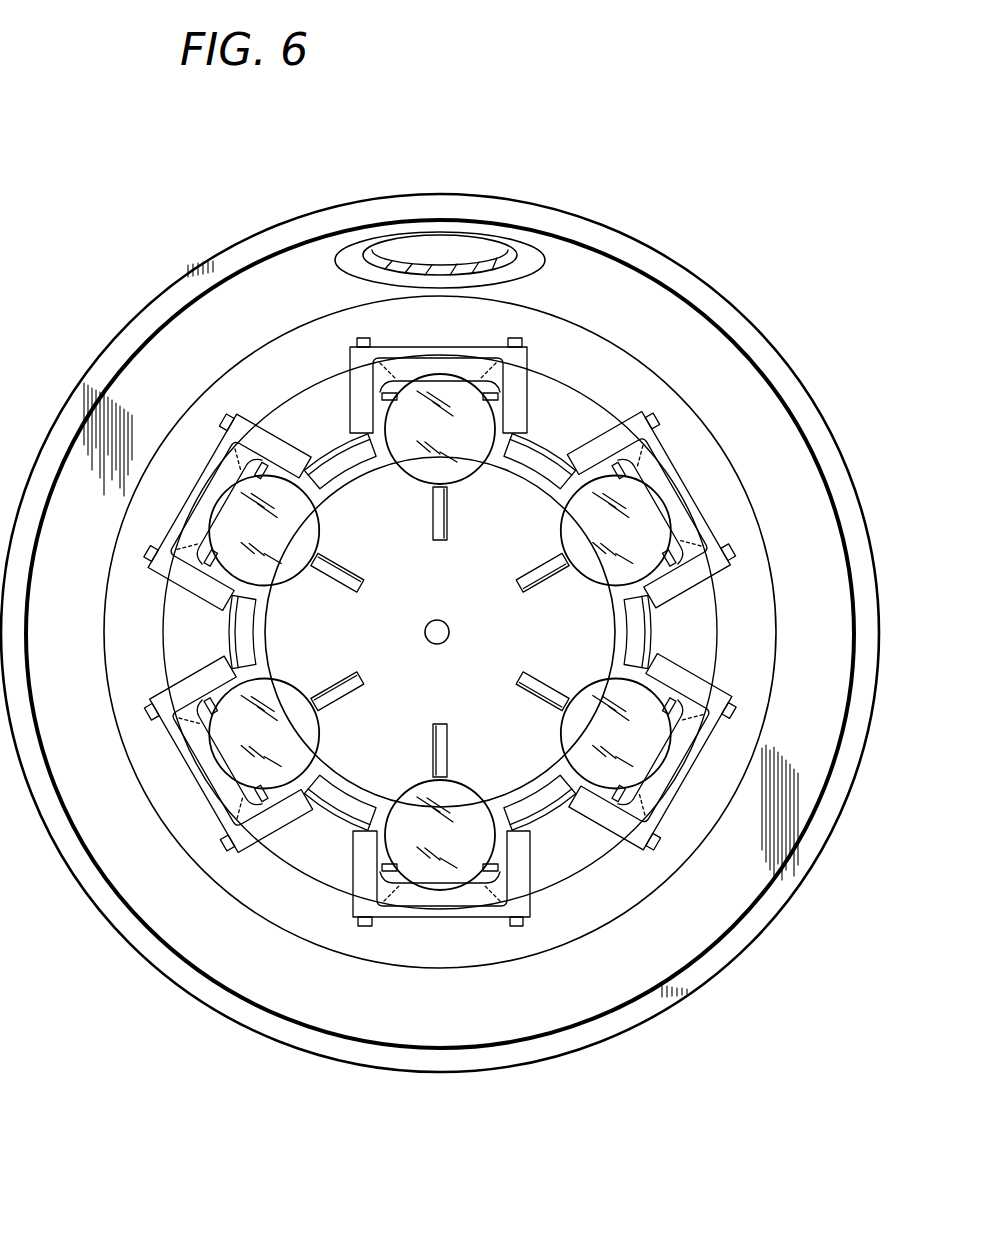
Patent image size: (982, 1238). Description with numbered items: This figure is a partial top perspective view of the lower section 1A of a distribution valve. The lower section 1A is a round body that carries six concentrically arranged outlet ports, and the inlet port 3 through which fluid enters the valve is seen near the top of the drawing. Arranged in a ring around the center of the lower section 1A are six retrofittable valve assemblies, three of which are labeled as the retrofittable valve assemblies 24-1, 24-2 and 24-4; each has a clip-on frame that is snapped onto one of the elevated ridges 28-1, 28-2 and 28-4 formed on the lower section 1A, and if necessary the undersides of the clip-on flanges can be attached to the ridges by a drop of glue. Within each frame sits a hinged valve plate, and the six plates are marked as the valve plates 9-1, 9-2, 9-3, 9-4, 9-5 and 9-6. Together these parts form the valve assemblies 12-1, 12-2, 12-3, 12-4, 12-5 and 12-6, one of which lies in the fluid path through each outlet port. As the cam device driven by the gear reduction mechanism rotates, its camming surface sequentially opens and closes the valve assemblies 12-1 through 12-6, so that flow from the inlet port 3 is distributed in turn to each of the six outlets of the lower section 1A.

The lower section 1A is at (120, 1028).
The inlet port 3 is at (478, 262).
The valve plate 9-1 is at (237, 746).
The valve plate 9-2 is at (237, 542).
The valve plate 9-3 is at (413, 441).
The valve plate 9-4 is at (643, 542).
The valve plate 9-5 is at (616, 734).
The valve plate 9-6 is at (413, 847).
The valve assembly 12-1 is at (197, 749).
The valve assembly 12-2 is at (223, 486).
The valve assembly 12-3 is at (479, 382).
The valve assembly 12-4 is at (679, 516).
The valve assembly 12-5 is at (649, 789).
The valve assembly 12-6 is at (440, 899).
The retrofittable valve assembly 24-1 is at (239, 764).
The retrofittable valve assembly 24-2 is at (208, 503).
The retrofittable valve assembly 24-4 is at (640, 502).
The elevated ridge 28-1 is at (177, 868).
The elevated ridge 28-2 is at (148, 553).
The elevated ridge 28-4 is at (653, 420).